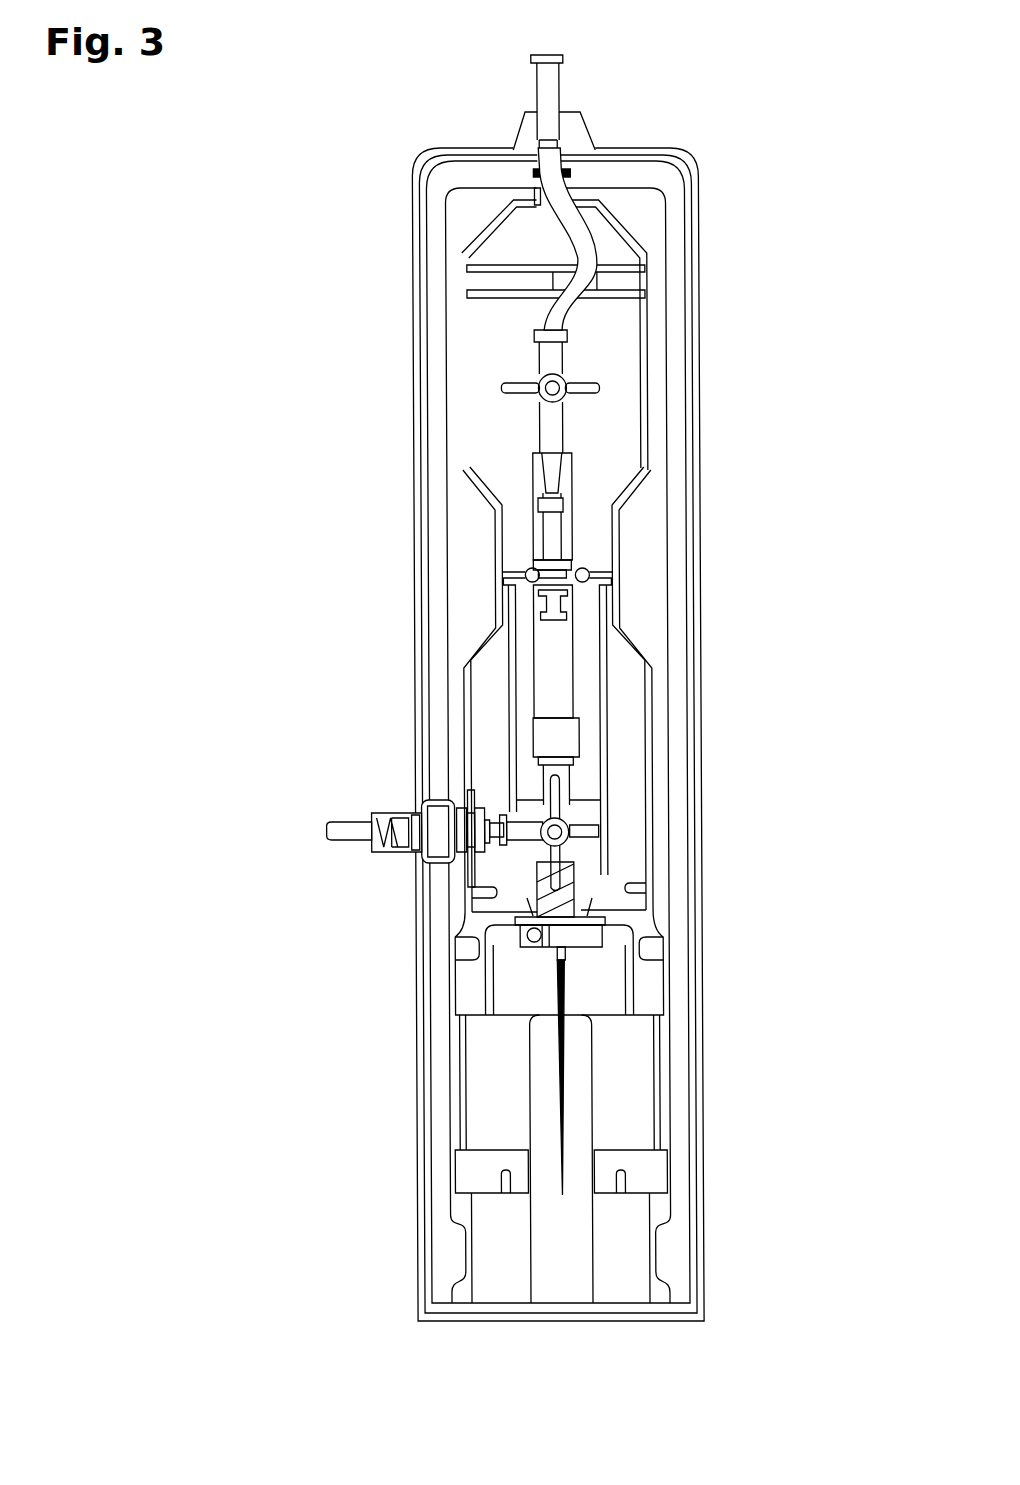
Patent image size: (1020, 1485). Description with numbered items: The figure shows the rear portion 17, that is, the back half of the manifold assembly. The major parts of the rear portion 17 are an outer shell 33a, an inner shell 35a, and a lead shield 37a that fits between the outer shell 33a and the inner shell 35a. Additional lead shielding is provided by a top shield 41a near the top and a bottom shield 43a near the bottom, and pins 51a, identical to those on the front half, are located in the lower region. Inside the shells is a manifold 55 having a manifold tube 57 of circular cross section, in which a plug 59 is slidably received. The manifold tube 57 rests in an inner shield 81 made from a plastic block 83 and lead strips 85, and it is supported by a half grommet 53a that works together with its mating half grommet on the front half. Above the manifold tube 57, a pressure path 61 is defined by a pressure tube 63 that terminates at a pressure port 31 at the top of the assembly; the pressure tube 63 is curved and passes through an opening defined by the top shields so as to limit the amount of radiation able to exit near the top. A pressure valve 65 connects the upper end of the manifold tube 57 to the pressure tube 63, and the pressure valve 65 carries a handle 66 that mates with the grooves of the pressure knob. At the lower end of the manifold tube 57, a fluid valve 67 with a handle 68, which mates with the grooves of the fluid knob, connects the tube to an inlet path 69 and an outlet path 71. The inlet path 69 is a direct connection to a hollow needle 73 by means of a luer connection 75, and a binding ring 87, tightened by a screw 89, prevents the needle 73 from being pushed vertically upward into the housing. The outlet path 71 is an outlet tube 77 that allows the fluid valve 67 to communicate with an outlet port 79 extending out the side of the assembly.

The rear portion 17 is at (716, 393).
The pressure port 31 is at (568, 60).
The outer shell 33a is at (703, 510).
The inner shell 35a is at (636, 516).
The lead shield 37a is at (680, 625).
The top shield 41a is at (625, 283).
The bottom shield 43a is at (613, 912).
The pins 51a is at (498, 1177).
The half grommet 53a is at (528, 572).
The manifold 55 is at (535, 630).
The manifold tube 57 is at (530, 677).
The plug 59 is at (528, 640).
The pressure path 61 is at (601, 237).
The pressure tube 63 is at (602, 248).
The pressure valve 65 is at (535, 400).
The handle 66 is at (510, 385).
The fluid valve 67 is at (566, 818).
The handle 68 is at (572, 838).
The inlet path 69 is at (577, 888).
The outlet path 71 is at (481, 856).
The hollow needle 73 is at (557, 1165).
The luer connection 75 is at (535, 865).
The outlet tube 77 is at (490, 818).
The outlet port 79 is at (345, 840).
The inner shield 81 is at (608, 733).
The plastic block 83 is at (585, 650).
The lead strips 85 is at (512, 673).
The binding ring 87 is at (583, 943).
The screw 89 is at (525, 940).